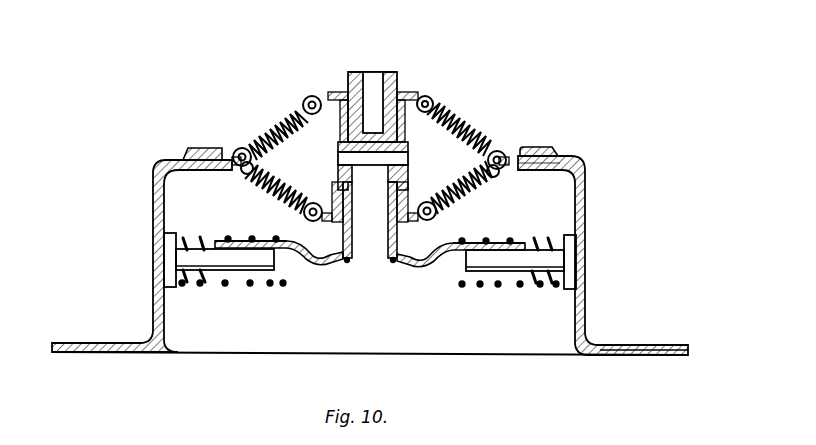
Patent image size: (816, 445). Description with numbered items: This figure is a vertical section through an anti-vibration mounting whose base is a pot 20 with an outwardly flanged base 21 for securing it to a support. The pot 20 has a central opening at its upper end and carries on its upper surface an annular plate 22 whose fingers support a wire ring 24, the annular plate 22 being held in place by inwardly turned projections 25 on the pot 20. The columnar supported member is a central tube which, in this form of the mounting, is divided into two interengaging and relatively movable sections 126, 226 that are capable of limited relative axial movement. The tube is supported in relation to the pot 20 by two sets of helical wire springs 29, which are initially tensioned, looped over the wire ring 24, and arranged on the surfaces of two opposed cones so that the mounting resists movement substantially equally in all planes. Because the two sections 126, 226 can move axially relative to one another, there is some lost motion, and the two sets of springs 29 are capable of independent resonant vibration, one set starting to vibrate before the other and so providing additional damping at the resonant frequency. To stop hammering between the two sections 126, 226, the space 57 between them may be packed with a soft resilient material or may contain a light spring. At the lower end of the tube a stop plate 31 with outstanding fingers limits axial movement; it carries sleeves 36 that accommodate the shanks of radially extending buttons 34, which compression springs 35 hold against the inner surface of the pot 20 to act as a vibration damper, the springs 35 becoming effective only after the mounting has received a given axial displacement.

The pot 20 is at (586, 202).
The outwardly flanged base 21 is at (668, 349).
The annular plate 22 is at (557, 161).
The wire ring 24 is at (504, 150).
The inwardly turned projections 25 is at (538, 148).
The helical wire springs 29 is at (268, 130).
The lower stop plate 31 is at (322, 263).
The buttons 34 is at (170, 236).
The compression springs 35 is at (226, 240).
The sleeves 36 is at (232, 272).
The space 57 is at (383, 157).
The tube section 126 is at (387, 72).
The tube section 226 is at (380, 262).